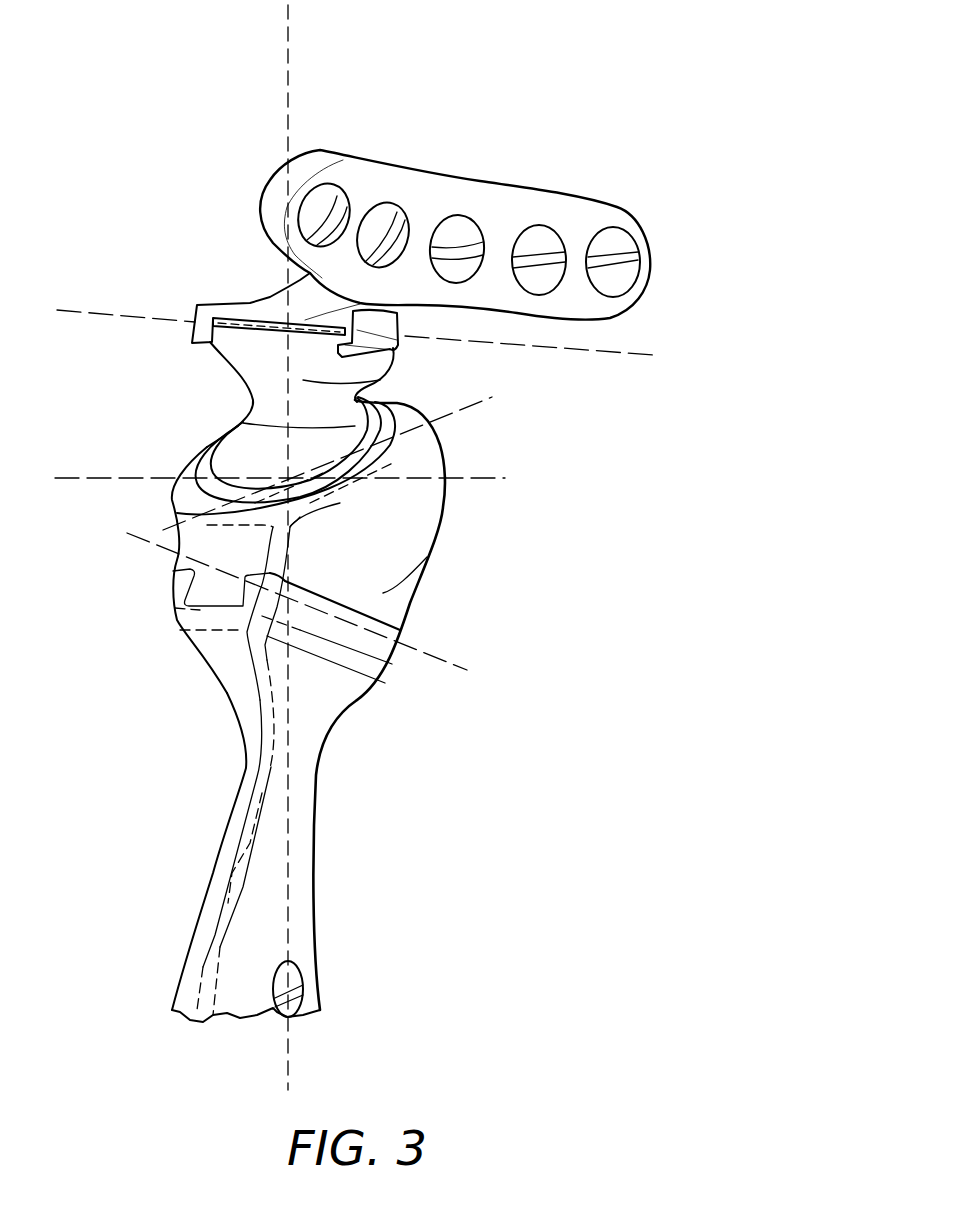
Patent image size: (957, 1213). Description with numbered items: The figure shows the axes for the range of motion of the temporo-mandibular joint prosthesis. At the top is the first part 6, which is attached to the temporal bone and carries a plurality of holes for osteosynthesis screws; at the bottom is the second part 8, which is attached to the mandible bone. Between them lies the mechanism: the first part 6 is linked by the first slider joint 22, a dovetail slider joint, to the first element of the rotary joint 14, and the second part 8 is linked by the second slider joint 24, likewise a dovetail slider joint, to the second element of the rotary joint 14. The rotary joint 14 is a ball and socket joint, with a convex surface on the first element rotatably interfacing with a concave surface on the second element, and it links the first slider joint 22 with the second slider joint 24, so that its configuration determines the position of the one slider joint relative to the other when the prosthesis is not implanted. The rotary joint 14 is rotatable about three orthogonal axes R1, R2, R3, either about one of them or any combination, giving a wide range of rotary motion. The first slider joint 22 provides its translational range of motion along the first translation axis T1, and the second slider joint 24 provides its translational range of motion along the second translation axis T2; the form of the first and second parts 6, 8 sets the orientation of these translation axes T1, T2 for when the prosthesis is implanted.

The first rotation axis R1 is at (290, 17).
The first translation axis T1 is at (604, 352).
The second rotation axis R2 is at (505, 478).
The third rotation axis R3 is at (477, 400).
The second translation axis T2 is at (440, 662).
The first part 6 is at (597, 212).
The first slider joint 22 is at (198, 363).
The rotary joint 14 is at (450, 511).
The second slider joint 24 is at (163, 603).
The second part 8 is at (205, 933).